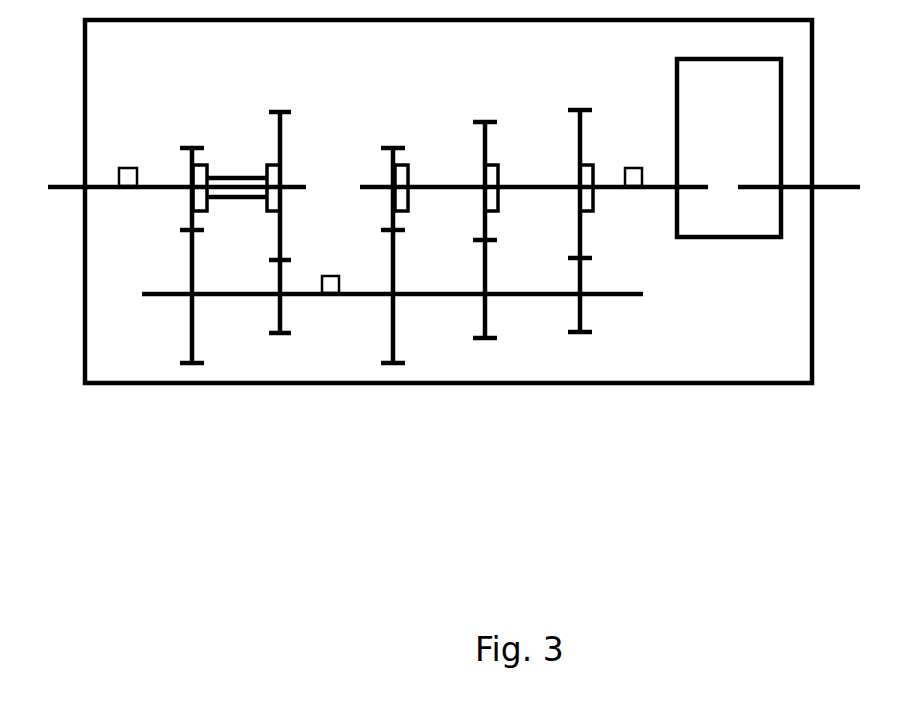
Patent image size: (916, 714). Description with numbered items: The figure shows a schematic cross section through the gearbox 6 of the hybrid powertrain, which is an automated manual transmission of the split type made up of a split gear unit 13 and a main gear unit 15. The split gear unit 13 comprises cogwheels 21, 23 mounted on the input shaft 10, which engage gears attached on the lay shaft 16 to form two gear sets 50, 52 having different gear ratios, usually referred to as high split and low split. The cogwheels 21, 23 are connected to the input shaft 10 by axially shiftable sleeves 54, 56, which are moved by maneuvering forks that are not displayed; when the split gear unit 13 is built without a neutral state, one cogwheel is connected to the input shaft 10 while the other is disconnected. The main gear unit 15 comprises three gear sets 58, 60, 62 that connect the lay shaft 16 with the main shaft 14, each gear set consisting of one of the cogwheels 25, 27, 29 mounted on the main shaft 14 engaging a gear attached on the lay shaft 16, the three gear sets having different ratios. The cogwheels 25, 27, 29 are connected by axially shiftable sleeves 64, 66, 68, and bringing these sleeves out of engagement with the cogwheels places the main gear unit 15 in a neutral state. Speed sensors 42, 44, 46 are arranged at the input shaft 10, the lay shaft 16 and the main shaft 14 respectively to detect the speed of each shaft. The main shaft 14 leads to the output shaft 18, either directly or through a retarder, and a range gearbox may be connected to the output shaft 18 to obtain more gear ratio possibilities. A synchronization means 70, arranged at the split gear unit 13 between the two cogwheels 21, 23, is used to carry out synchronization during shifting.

The gearbox 6 is at (108, 383).
The input shaft 10 is at (66, 184).
The split gear unit 13 is at (250, 355).
The main shaft 14 is at (670, 190).
The main gear unit 15 is at (510, 353).
The lay shaft 16 is at (158, 298).
The output shaft 18 is at (830, 183).
The cogwheel 21 is at (186, 146).
The cogwheel 23 is at (278, 109).
The cogwheel 25 is at (388, 146).
The cogwheel 27 is at (478, 120).
The cogwheel 29 is at (578, 108).
The speed sensor 42 is at (120, 168).
The speed sensor 44 is at (322, 294).
The speed sensor 46 is at (640, 186).
The gear set 50 is at (188, 255).
The gear set 52 is at (278, 257).
The shiftable sleeve 54 is at (194, 198).
The shiftable sleeve 56 is at (274, 172).
The gear set 58 is at (390, 258).
The gear set 60 is at (482, 262).
The gear set 62 is at (578, 250).
The shiftable sleeve 64 is at (408, 182).
The shiftable sleeve 66 is at (498, 178).
The shiftable sleeve 68 is at (596, 176).
The synchronization means 70 is at (250, 177).